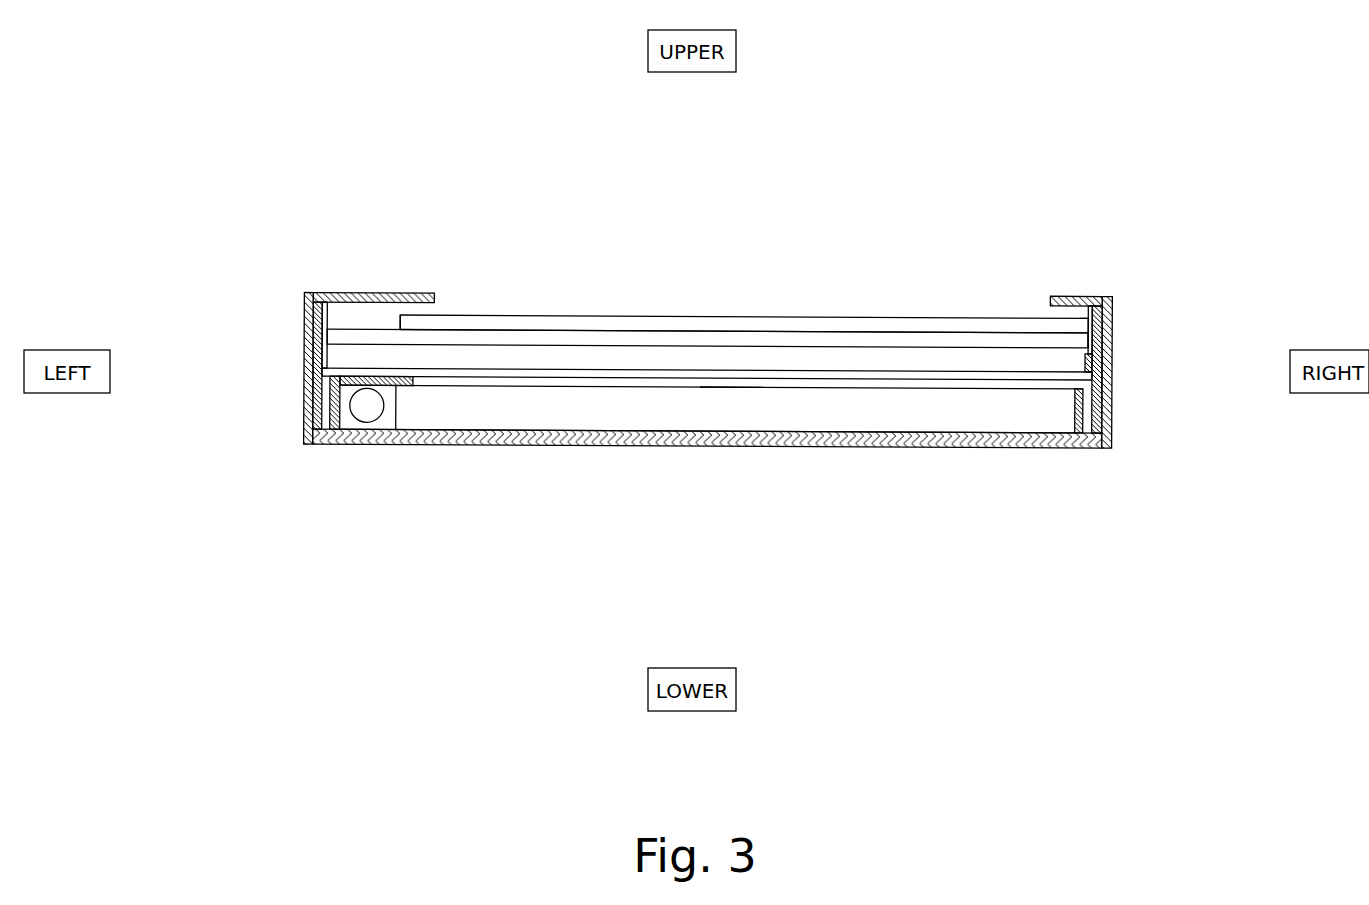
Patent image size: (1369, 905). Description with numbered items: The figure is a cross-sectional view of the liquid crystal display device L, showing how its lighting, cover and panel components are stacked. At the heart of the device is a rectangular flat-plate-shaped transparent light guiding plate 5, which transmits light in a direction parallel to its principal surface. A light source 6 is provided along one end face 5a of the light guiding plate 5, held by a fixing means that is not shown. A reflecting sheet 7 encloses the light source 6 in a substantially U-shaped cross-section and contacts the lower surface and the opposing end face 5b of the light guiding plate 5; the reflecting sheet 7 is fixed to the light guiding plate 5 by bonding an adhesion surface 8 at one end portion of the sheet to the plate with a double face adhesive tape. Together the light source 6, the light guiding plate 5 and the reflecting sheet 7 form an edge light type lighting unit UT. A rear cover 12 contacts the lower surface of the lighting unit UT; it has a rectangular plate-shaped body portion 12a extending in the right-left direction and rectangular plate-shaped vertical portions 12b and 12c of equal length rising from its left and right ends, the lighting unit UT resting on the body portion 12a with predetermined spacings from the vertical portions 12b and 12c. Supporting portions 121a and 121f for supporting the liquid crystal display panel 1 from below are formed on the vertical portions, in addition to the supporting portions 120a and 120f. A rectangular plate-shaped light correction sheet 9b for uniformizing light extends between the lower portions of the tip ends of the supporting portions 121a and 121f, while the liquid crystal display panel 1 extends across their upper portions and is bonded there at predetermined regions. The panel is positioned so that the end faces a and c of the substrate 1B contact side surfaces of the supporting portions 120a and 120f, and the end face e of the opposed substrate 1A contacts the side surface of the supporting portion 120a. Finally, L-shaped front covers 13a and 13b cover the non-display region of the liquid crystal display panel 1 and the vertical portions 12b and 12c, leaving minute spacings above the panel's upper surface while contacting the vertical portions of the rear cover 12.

The liquid crystal display device L is at (1163, 216).
The liquid crystal display panel 1 is at (825, 307).
The opposed substrate 1A is at (565, 330).
The substrate 1B is at (622, 345).
The light guiding plate 5 is at (682, 405).
The end face 5a is at (415, 441).
The opposing end face 5b is at (1078, 432).
The light source 6 is at (362, 410).
The reflecting sheet 7 is at (565, 441).
The adhesion surface 8 is at (400, 390).
The light correction sheet 9b is at (918, 372).
The rear cover 12 is at (921, 457).
The body portion 12a is at (800, 448).
The vertical portion 12b is at (310, 448).
The vertical portion 12c is at (1107, 449).
The front cover 13a is at (303, 398).
The front cover 13b is at (1108, 405).
The supporting portion 120a is at (1086, 313).
The supporting portion 120f is at (342, 317).
The supporting portion 121a is at (1108, 360).
The supporting portion 121f is at (312, 355).
The end face a is at (1086, 328).
The end face e is at (1088, 342).
The end face c is at (402, 333).
The lighting unit UT is at (734, 400).